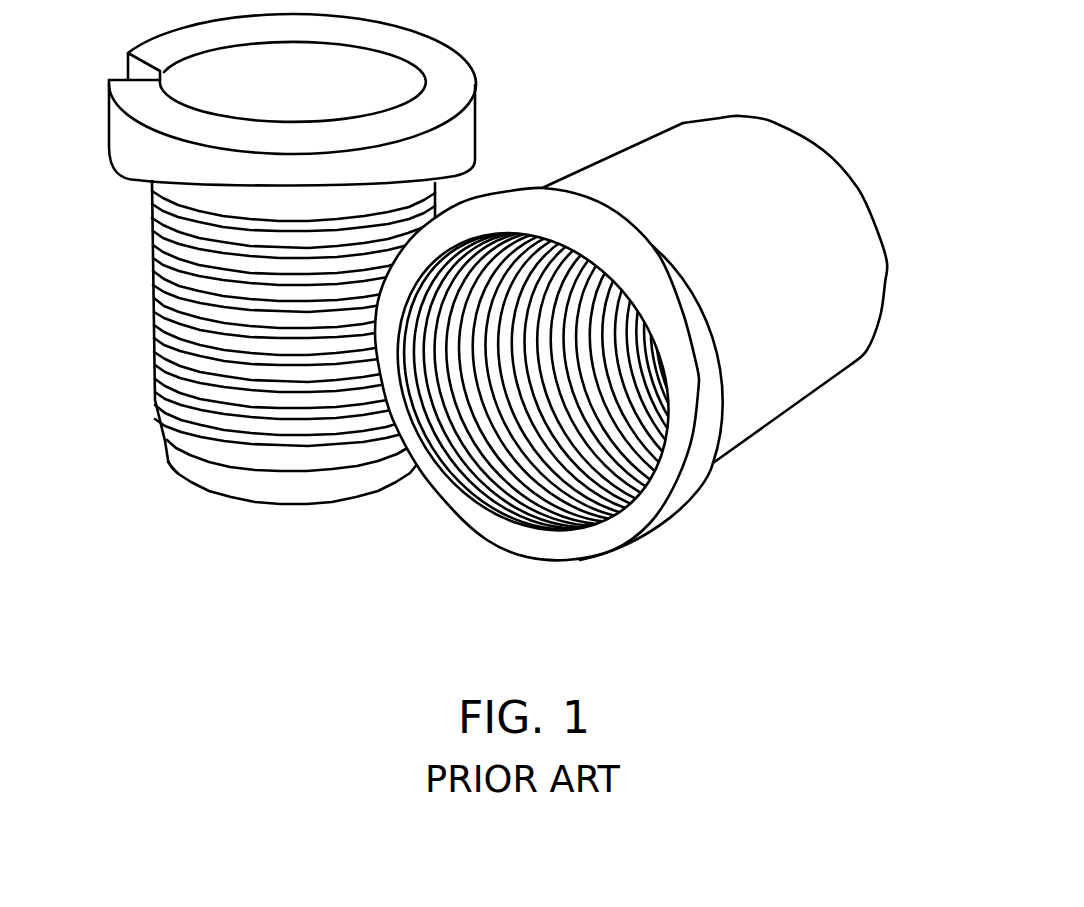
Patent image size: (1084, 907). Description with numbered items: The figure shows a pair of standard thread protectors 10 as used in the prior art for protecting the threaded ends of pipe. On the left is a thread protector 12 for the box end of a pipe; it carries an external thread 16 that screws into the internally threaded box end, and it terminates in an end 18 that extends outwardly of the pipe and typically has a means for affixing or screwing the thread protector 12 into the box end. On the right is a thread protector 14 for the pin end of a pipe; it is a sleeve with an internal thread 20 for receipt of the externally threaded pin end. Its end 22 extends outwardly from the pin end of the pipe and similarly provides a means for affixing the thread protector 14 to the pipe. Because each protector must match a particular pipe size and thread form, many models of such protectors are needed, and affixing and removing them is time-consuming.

The pair of standard thread protectors 10 is at (654, 325).
The thread protector 12 is at (254, 342).
The thread protector 14 is at (885, 260).
The external thread 16 is at (157, 308).
The end 18 is at (125, 128).
The internal thread 20 is at (489, 486).
The end 22 is at (722, 120).